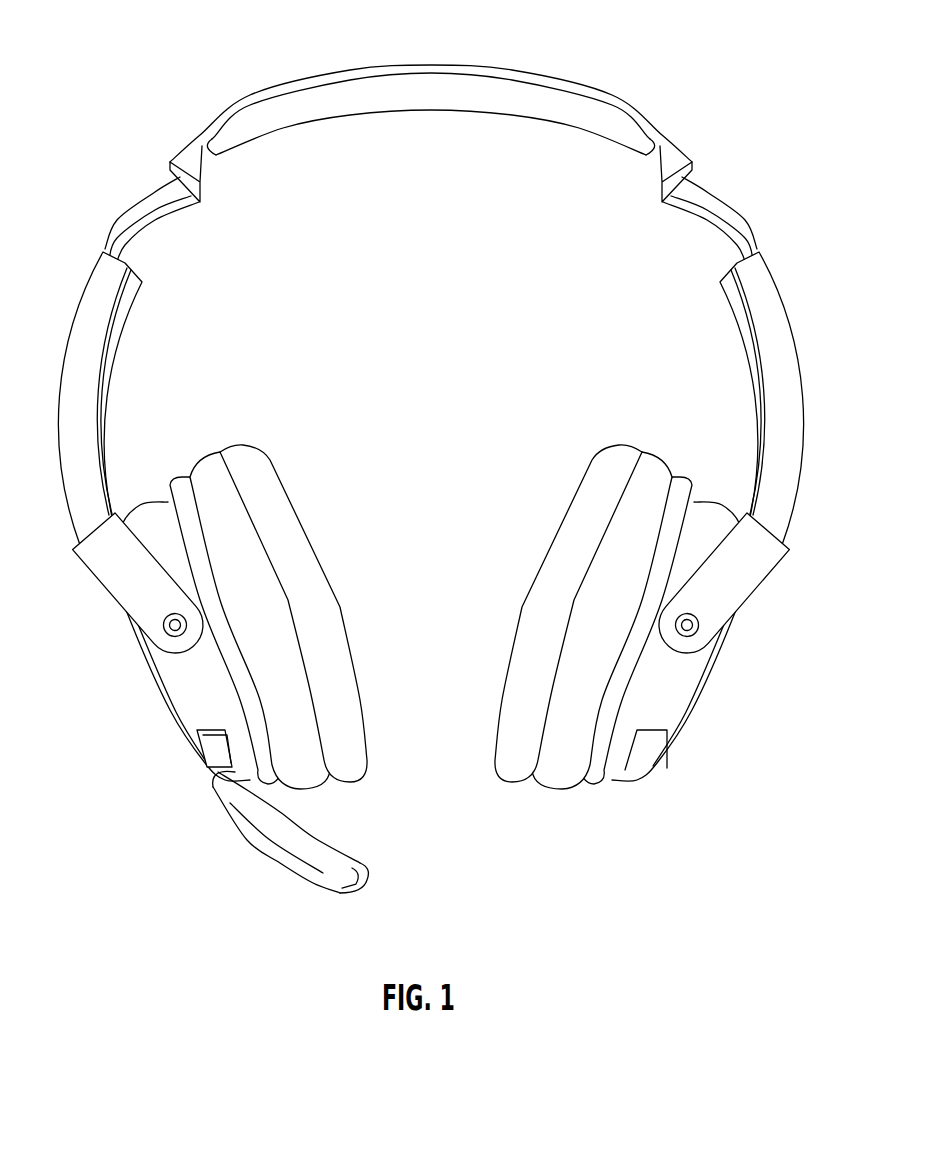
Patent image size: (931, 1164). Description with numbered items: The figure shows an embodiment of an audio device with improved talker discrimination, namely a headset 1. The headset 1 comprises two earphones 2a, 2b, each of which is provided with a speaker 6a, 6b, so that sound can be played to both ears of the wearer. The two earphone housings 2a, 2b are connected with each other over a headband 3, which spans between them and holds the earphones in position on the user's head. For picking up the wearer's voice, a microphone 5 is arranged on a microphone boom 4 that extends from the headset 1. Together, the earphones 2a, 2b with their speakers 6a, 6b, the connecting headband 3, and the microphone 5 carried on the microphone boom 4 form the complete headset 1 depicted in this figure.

The headset 1 is at (752, 40).
The earphone 2a is at (665, 712).
The earphone 2b is at (197, 710).
The headband 3 is at (560, 103).
The microphone boom 4 is at (263, 828).
The microphone 5 is at (350, 858).
The speaker 6a is at (751, 647).
The speaker 6b is at (119, 650).